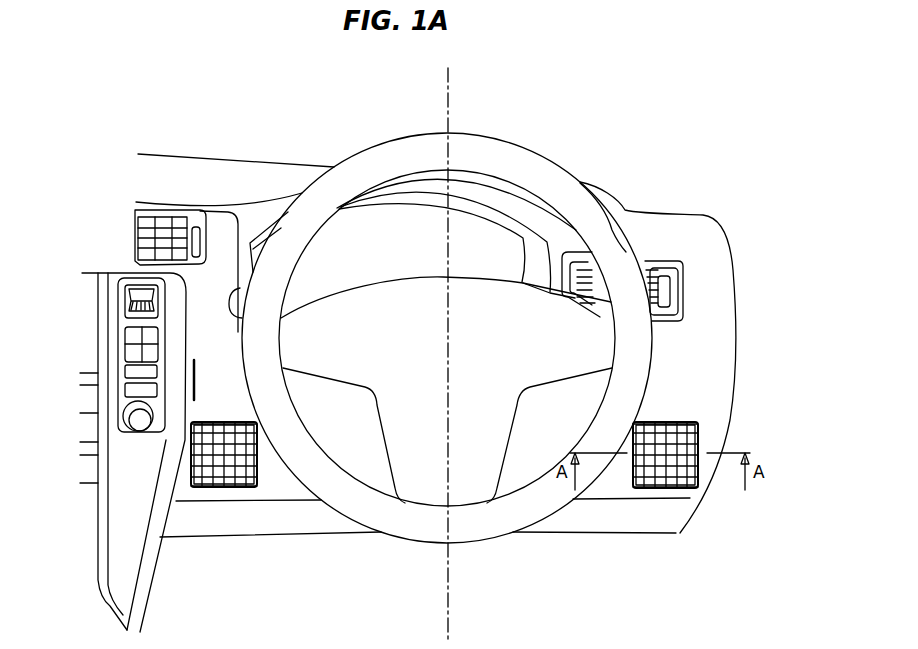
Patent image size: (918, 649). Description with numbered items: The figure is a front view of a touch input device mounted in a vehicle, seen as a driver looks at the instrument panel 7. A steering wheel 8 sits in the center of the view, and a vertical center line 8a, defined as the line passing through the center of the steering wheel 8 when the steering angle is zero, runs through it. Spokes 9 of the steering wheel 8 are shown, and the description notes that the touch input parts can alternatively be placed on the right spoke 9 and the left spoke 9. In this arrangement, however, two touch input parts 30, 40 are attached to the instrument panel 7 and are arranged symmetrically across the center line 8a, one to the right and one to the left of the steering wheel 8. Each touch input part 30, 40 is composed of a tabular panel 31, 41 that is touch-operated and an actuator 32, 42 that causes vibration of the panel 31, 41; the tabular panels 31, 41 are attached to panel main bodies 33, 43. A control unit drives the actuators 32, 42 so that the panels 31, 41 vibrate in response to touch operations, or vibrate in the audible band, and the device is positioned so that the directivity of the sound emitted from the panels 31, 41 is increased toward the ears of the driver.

The instrument panel 7 is at (285, 484).
The steering wheel 8 is at (538, 152).
The center line 8a is at (452, 80).
The spokes 9 is at (606, 340).
The touch input part 30 is at (658, 488).
The panel 31 is at (675, 462).
The actuator 32 is at (697, 440).
The panel main body 33 is at (640, 489).
The touch input part 40 is at (230, 487).
The panel 41 is at (207, 465).
The actuator 42 is at (213, 421).
The panel main body 43 is at (215, 488).